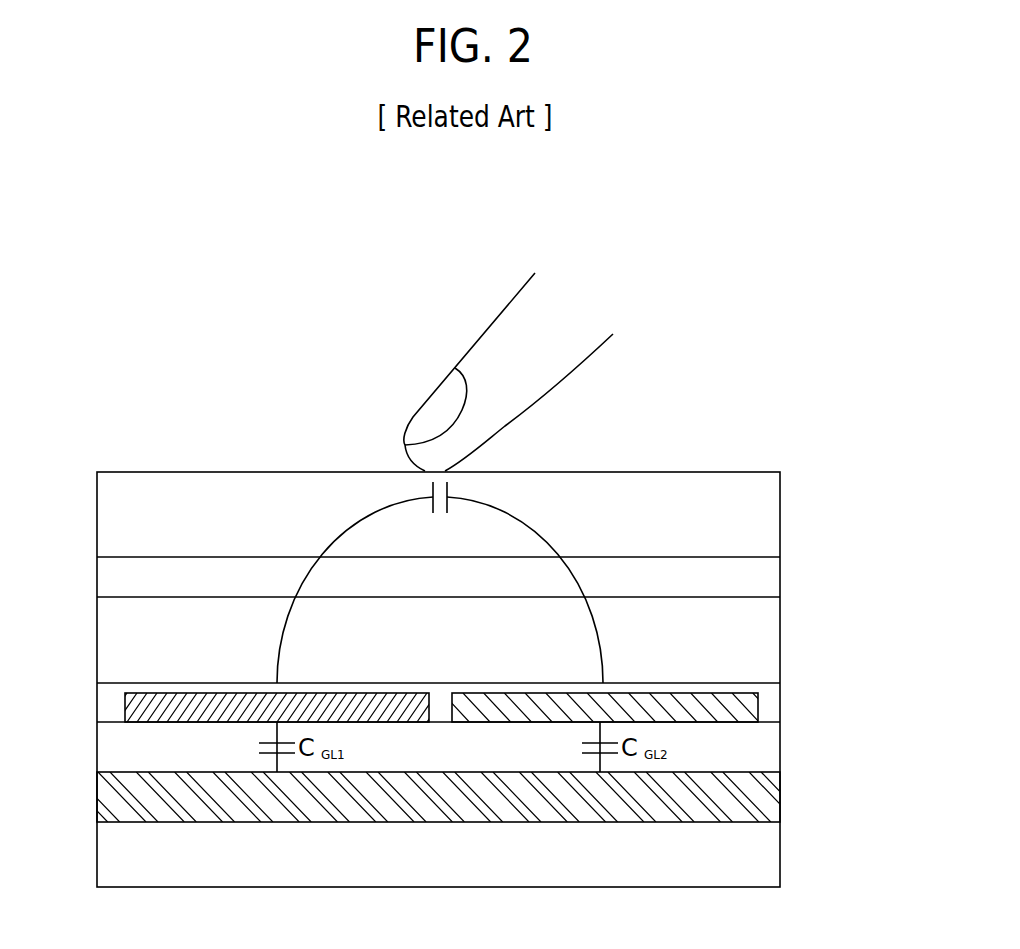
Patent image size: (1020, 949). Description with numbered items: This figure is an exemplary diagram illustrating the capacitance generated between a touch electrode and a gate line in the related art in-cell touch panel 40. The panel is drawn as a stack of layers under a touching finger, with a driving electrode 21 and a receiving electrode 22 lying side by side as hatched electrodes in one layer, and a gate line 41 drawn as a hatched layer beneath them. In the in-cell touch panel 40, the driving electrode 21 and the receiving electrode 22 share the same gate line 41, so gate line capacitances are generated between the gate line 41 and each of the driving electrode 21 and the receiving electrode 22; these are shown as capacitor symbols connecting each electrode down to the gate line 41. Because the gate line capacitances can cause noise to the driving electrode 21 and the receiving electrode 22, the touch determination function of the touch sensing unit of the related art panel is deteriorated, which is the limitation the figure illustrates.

The in-cell touch panel 40 is at (28, 410).
The driving electrode 21 is at (205, 701).
The receiving electrode 22 is at (645, 702).
The gate line 41 is at (762, 796).